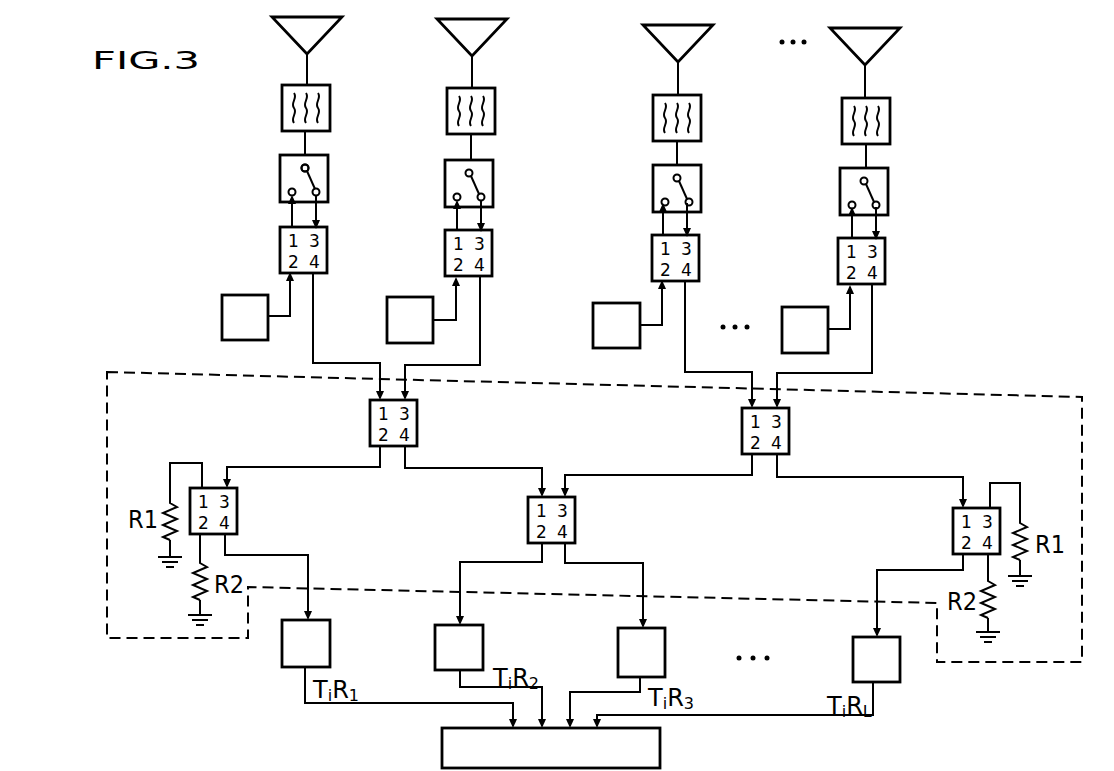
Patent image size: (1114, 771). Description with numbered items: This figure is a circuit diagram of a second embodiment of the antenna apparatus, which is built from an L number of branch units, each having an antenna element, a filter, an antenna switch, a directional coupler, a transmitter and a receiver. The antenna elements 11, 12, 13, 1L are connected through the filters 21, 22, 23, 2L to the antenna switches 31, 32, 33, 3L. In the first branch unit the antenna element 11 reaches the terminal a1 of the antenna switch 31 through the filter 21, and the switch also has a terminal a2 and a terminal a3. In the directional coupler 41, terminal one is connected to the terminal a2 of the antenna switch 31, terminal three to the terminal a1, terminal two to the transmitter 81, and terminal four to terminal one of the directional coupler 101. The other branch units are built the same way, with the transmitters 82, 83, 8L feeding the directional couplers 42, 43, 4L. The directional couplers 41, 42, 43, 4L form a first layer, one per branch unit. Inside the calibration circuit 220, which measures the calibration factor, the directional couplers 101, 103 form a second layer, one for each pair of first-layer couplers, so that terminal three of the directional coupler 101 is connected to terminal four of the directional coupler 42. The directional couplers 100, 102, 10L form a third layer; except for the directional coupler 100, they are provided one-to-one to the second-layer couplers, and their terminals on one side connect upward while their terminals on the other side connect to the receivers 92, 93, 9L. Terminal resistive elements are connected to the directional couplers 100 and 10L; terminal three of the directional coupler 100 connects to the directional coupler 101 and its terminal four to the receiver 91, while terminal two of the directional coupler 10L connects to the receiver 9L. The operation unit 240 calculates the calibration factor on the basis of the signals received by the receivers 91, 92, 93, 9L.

The antenna element 11 is at (334, 34).
The antenna element 12 is at (499, 36).
The antenna element 13 is at (705, 41).
The antenna element 1L is at (892, 45).
The filter 21 is at (330, 105).
The filter 22 is at (495, 109).
The filter 23 is at (701, 114).
The filter 2L is at (890, 118).
The antenna switch 31 is at (309, 178).
The antenna switch 32 is at (493, 171).
The antenna switch 33 is at (701, 189).
The antenna switch 3L is at (888, 193).
The terminal of antenna switch a1 is at (320, 192).
The terminal of antenna switch a2 is at (288, 192).
The terminal of antenna switch a3 is at (299, 168).
The directional coupler 41 is at (328, 246).
The directional coupler 42 is at (493, 251).
The directional coupler 43 is at (699, 258).
The directional coupler 4L is at (885, 261).
The transmitter 81 is at (236, 295).
The transmitter 82 is at (405, 297).
The transmitter 83 is at (608, 303).
The transmitter 8L is at (797, 307).
The receiver 91 is at (282, 658).
The receiver 92 is at (435, 650).
The receiver 93 is at (618, 657).
The receiver 9L is at (853, 660).
The directional coupler 100 is at (237, 512).
The directional coupler 101 is at (417, 419).
The directional coupler 102 is at (575, 520).
The directional coupler 103 is at (789, 427).
The directional coupler 10L is at (953, 533).
The calibration circuit 220 is at (1055, 394).
The operation unit 240 is at (660, 748).